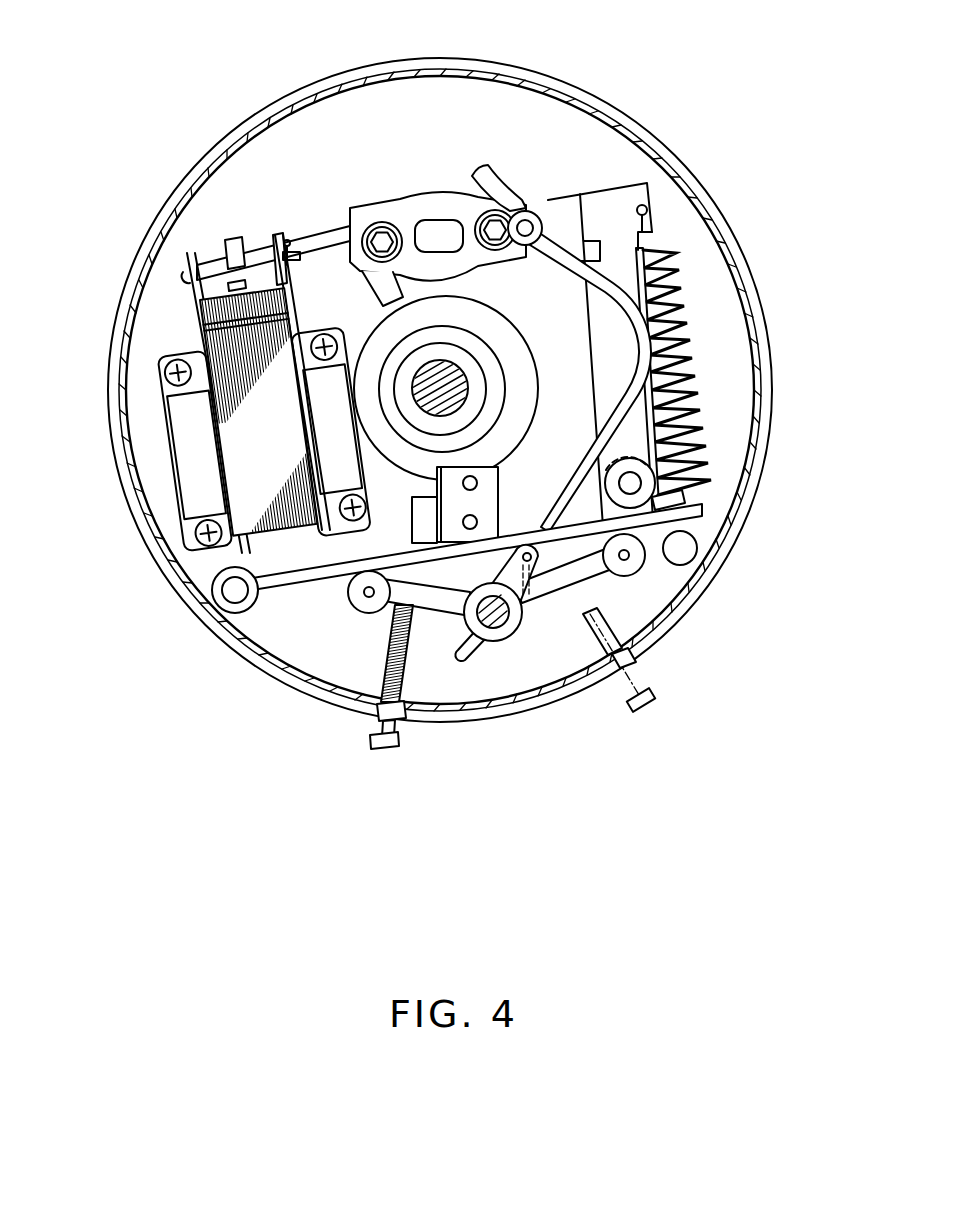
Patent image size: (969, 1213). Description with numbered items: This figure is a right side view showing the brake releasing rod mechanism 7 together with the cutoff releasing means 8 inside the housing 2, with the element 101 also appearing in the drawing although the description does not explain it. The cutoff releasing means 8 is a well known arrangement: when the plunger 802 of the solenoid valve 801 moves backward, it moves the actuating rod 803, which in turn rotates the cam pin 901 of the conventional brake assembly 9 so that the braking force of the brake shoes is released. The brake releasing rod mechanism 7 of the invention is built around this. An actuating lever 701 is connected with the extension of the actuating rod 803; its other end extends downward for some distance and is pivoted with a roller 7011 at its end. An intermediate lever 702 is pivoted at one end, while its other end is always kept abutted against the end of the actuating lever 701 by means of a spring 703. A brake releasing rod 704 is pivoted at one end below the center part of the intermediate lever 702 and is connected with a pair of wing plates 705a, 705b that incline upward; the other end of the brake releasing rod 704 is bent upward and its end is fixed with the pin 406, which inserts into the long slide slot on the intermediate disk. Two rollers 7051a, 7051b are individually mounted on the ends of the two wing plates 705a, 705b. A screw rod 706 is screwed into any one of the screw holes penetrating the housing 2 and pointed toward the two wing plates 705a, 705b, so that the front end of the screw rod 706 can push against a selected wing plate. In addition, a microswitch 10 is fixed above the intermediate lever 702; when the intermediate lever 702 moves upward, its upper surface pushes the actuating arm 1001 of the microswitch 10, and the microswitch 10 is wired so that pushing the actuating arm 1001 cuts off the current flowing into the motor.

The housing 2 is at (733, 553).
The brake releasing rod mechanism 7 is at (747, 349).
The cutoff releasing means 8 is at (213, 296).
The brake assembly 9 is at (435, 153).
The microswitch 10 is at (500, 492).
The shaft 101 is at (457, 377).
The pin 406 is at (528, 212).
The actuating lever 701 is at (618, 257).
The intermediate lever 702 is at (250, 615).
The spring 703 is at (665, 368).
The brake releasing rod 704 is at (642, 250).
The wing plate 705a is at (560, 590).
The wing plate 705b is at (428, 607).
The screw rod 706 is at (372, 752).
The solenoid valve 801 is at (247, 427).
The plunger 802 is at (190, 250).
The actuating rod 803 is at (313, 223).
The cam pin 901 is at (422, 217).
The actuating arm 1001 is at (403, 530).
The roller 7011 is at (656, 470).
The roller 7051a is at (640, 575).
The roller 7051b is at (355, 608).